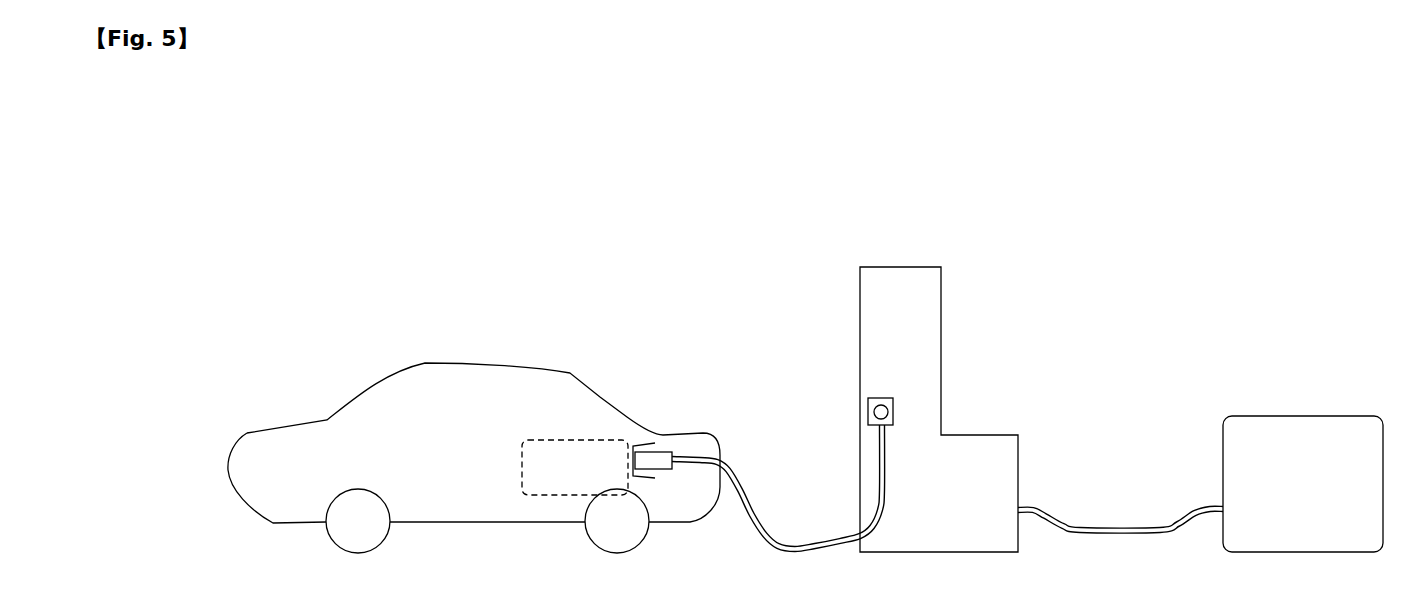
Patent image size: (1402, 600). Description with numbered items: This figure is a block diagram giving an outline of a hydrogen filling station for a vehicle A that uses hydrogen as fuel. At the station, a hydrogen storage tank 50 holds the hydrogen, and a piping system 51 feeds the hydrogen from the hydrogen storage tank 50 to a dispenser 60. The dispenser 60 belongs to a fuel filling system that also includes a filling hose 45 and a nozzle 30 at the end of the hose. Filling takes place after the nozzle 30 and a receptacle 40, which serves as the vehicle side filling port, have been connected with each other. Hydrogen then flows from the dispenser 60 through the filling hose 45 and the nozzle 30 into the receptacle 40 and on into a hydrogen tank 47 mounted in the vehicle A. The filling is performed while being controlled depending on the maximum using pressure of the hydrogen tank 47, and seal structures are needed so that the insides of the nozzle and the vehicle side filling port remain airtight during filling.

The vehicle A is at (443, 363).
The nozzle 30 is at (663, 448).
The receptacle 40 is at (653, 478).
The filling hose 45 is at (783, 542).
The hydrogen tank 47 is at (583, 440).
The hydrogen storage tank 50 is at (1297, 413).
The piping system 51 is at (1118, 527).
The dispenser 60 is at (983, 435).